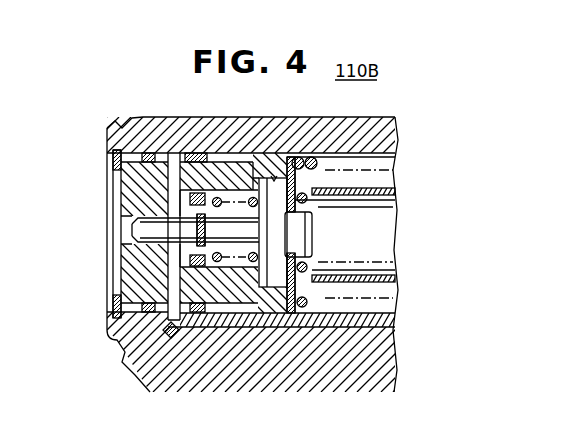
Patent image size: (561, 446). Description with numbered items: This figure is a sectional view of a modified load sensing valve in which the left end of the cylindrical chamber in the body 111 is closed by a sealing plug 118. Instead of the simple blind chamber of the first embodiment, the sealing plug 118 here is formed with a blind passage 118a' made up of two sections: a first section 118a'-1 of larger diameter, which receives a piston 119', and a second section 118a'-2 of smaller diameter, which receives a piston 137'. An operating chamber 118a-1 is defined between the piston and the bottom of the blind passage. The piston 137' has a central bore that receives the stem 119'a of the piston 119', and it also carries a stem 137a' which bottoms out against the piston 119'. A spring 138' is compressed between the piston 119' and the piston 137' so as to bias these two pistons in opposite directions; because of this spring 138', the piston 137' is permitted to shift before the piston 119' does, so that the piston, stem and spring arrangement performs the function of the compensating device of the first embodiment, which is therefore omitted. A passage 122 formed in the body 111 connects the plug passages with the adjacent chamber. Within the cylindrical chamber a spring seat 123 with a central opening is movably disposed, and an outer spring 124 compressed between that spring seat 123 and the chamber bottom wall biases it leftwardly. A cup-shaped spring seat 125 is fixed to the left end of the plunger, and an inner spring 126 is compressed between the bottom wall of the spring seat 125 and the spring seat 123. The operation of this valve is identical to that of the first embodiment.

The body 111 is at (146, 356).
The sealing plug 118 is at (130, 216).
The operating chamber 118a-1 is at (133, 226).
The blind passage 118a' is at (229, 333).
The first section 118a'-1 is at (236, 142).
The second section 118a'-2 is at (211, 207).
The piston 119' is at (293, 292).
The stem 119'a is at (160, 244).
The passage 122 is at (368, 332).
The spring seat 123 is at (316, 166).
The outer spring 124 is at (383, 182).
The spring seat 125 is at (383, 203).
The inner spring 126 is at (348, 263).
The piston 137' is at (144, 206).
The stem 137a' is at (83, 312).
The spring 138' is at (185, 373).